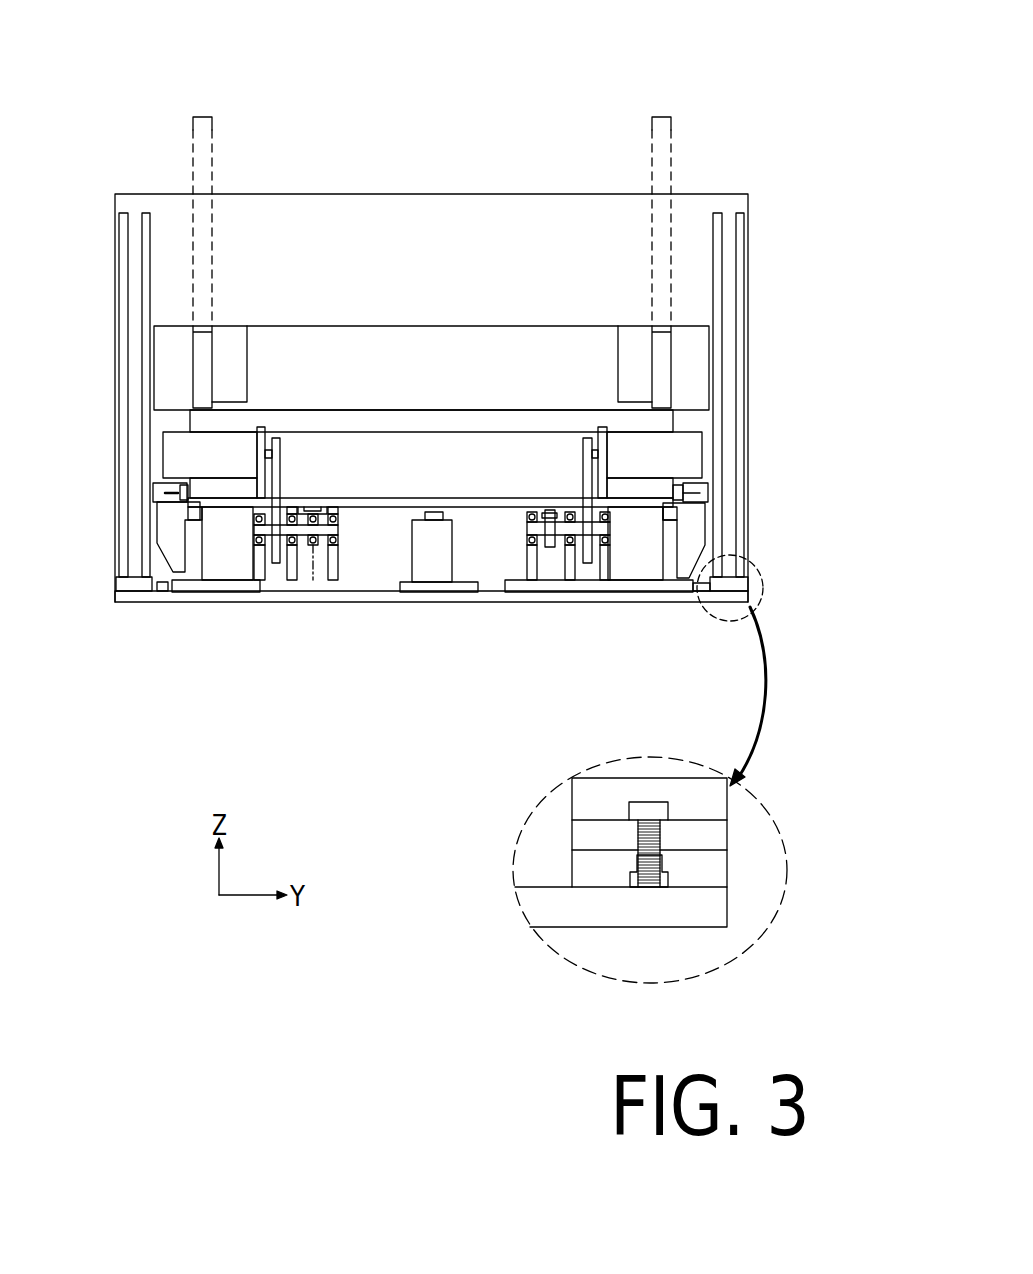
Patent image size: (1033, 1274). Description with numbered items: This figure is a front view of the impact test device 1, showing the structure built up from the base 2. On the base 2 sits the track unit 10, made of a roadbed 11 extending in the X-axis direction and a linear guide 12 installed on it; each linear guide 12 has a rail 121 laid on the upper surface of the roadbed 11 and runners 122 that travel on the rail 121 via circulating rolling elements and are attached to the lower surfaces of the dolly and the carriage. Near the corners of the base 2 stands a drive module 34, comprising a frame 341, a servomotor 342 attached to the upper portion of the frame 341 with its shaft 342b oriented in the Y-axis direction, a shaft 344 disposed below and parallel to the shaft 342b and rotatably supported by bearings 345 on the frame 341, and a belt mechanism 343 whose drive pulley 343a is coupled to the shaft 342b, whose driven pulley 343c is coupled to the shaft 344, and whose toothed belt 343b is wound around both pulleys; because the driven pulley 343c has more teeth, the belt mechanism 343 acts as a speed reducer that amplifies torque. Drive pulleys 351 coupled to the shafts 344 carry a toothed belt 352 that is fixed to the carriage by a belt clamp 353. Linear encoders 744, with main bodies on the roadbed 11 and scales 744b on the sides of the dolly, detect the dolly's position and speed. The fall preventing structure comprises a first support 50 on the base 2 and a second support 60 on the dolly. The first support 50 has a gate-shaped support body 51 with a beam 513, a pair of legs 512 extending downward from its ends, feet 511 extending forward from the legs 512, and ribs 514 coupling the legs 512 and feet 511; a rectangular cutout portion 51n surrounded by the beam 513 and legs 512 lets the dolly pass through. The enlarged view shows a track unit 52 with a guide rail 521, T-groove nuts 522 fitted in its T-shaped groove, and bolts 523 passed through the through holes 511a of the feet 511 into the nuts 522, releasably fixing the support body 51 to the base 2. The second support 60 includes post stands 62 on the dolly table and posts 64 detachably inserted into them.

The impact test device 1 is at (716, 72).
The base 2 is at (238, 600).
The track unit 10 is at (430, 497).
The roadbed 11 is at (453, 535).
The linear guide 12 is at (467, 497).
The rail 121 is at (438, 515).
The runner 122 is at (457, 510).
The drive module 34 is at (355, 637).
The frame 341 is at (215, 573).
The servomotor 342 is at (237, 437).
The shaft 342b is at (263, 432).
The belt mechanism 343 is at (376, 682).
The drive pulley 343a is at (328, 553).
The toothed belt 343b is at (312, 547).
The driven pulley 343c is at (290, 557).
The shaft 344 is at (295, 488).
The bearing 345 is at (280, 462).
The drive pulley 351 is at (603, 552).
The toothed belt 352 is at (550, 547).
The belt clamp 353 is at (523, 513).
The first support 50 is at (760, 205).
The support body 51 is at (494, 550).
The foot 511 is at (750, 575).
The through hole 511a is at (650, 815).
The leg 512 is at (727, 338).
The beam 513 is at (697, 252).
The rib 514 is at (717, 267).
The cutout portion 51n is at (430, 328).
The track unit 52 is at (528, 896).
The guide rail 521 is at (592, 870).
The T-groove nut 522 is at (628, 875).
The bolt 523 is at (633, 838).
The second support 60 is at (352, 270).
The post stand 62 is at (196, 355).
The post 64 is at (210, 138).
The linear encoder 744 is at (148, 490).
The scale 744b is at (172, 495).